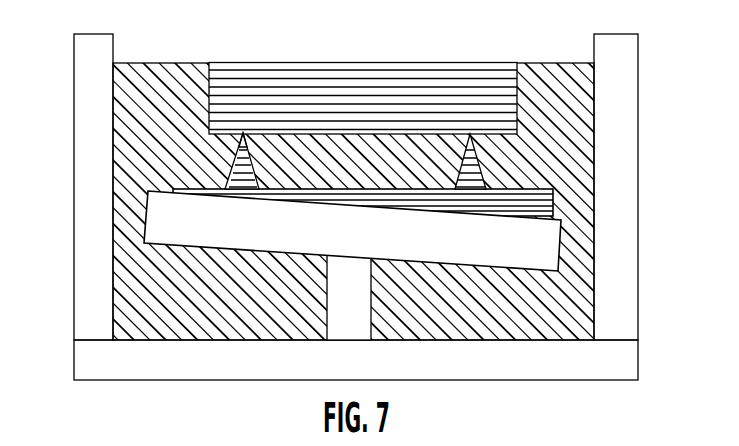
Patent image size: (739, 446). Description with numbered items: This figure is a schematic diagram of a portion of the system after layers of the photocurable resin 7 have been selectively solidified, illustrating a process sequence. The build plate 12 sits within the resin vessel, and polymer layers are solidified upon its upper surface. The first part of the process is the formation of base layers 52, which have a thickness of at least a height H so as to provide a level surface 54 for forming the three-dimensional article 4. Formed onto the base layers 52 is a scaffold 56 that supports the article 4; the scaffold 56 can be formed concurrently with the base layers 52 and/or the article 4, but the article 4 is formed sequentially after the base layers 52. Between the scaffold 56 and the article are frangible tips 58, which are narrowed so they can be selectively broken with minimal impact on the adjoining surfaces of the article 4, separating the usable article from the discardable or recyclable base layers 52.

The 3D article 4 is at (500, 92).
The photocurable resin 7 is at (568, 313).
The build plate 12 is at (560, 245).
The base layers 52 is at (555, 206).
The level surface 54 is at (510, 187).
The scaffold 56 is at (240, 187).
The frangible tips 58 is at (227, 187).